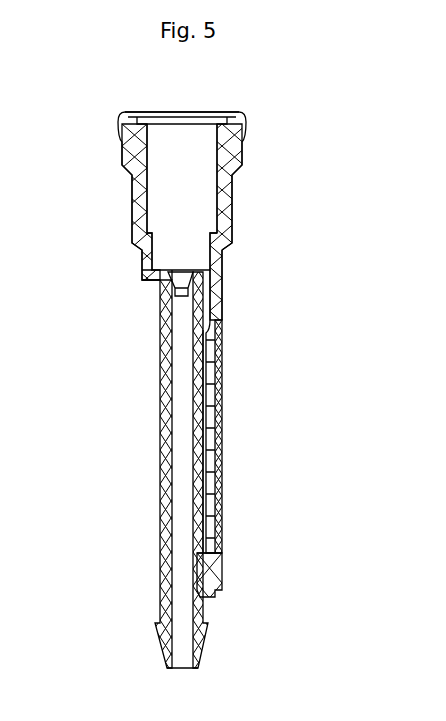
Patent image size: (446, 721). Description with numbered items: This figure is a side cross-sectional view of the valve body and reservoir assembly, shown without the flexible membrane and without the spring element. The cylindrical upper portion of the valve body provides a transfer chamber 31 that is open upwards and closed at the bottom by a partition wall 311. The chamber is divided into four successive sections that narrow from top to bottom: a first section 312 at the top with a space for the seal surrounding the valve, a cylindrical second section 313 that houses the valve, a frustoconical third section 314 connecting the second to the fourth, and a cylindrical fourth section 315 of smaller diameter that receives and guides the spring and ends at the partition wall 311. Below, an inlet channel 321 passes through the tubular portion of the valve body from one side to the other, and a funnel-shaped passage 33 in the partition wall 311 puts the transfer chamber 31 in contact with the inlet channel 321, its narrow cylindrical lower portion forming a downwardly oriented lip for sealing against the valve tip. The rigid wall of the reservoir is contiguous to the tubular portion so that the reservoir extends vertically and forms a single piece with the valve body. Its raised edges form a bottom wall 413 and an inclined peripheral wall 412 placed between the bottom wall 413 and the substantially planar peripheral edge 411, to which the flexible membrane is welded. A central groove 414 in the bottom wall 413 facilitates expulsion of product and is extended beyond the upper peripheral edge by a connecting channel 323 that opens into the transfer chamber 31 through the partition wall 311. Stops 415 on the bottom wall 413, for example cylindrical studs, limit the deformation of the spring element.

The transfer chamber 31 is at (177, 172).
The partition wall 311 is at (158, 282).
The first section 312 is at (270, 113).
The second section 313 is at (270, 127).
The third section 314 is at (270, 234).
The fourth section 315 is at (270, 250).
The connecting channel 323 is at (210, 285).
The funnel-shaped passage 33 is at (180, 277).
The inlet channel 321 is at (183, 397).
The bottom wall 413 is at (208, 387).
The stops 415 is at (217, 412).
The central groove 414 is at (203, 440).
The peripheral wall 412 is at (212, 570).
The peripheral edge 411 is at (220, 581).